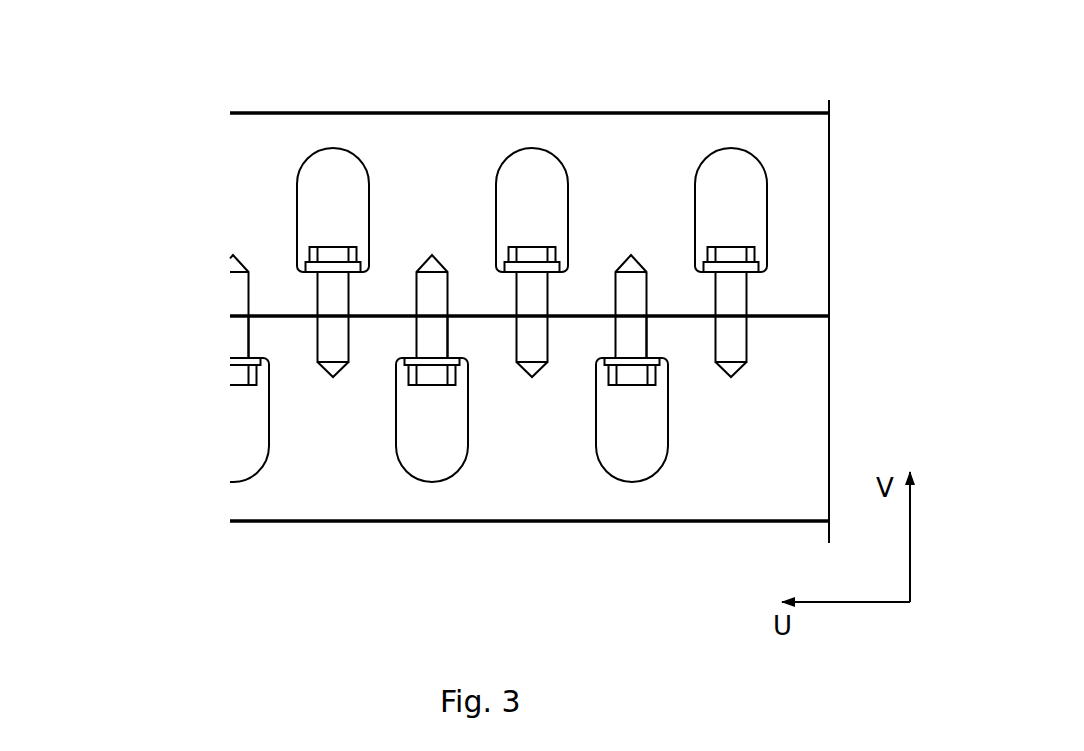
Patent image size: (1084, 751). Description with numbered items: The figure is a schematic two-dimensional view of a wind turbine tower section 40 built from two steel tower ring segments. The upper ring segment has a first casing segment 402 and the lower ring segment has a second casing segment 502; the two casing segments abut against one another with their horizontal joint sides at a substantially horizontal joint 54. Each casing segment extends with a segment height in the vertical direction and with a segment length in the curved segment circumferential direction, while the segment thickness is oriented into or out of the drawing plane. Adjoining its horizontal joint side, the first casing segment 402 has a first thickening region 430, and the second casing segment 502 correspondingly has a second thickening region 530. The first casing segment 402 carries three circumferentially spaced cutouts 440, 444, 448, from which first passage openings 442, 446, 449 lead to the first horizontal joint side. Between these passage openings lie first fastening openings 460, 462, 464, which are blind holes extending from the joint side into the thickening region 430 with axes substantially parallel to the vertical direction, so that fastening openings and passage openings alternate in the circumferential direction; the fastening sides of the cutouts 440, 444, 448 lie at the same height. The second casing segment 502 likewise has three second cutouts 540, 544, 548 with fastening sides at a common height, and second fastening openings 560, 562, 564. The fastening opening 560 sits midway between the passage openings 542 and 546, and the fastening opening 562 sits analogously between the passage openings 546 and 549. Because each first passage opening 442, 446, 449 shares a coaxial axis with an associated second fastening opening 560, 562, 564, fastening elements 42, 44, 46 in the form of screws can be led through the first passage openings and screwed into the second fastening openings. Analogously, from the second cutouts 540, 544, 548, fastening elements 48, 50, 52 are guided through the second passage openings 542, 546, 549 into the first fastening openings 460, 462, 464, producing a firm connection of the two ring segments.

The tower section 40 is at (498, 291).
The first casing segment 402 is at (220, 185).
The fastening element 42 is at (347, 260).
The fastening element 44 is at (547, 260).
The fastening element 46 is at (746, 260).
The fastening element 48 is at (215, 360).
The fastening element 50 is at (448, 374).
The fastening element 52 is at (651, 374).
The horizontal joint 54 is at (835, 316).
The first thickening region 430 is at (835, 127).
The second thickening region 530 is at (835, 420).
The second casing segment 502 is at (188, 442).
The cutout 440 is at (330, 165).
The cutout 444 is at (529, 165).
The cutout 448 is at (728, 165).
The first passage opening 442 is at (373, 343).
The first passage opening 446 is at (573, 343).
The first passage opening 449 is at (772, 343).
The first fastening opening 460 is at (274, 294).
The first fastening opening 462 is at (469, 291).
The first fastening opening 464 is at (671, 291).
The second cutout 540 is at (238, 463).
The second cutout 544 is at (435, 462).
The second cutout 548 is at (635, 462).
The second passage opening 542 is at (253, 342).
The second passage opening 546 is at (452, 340).
The second passage opening 549 is at (655, 340).
The second fastening opening 560 is at (348, 376).
The second fastening opening 562 is at (547, 376).
The second fastening opening 564 is at (746, 376).